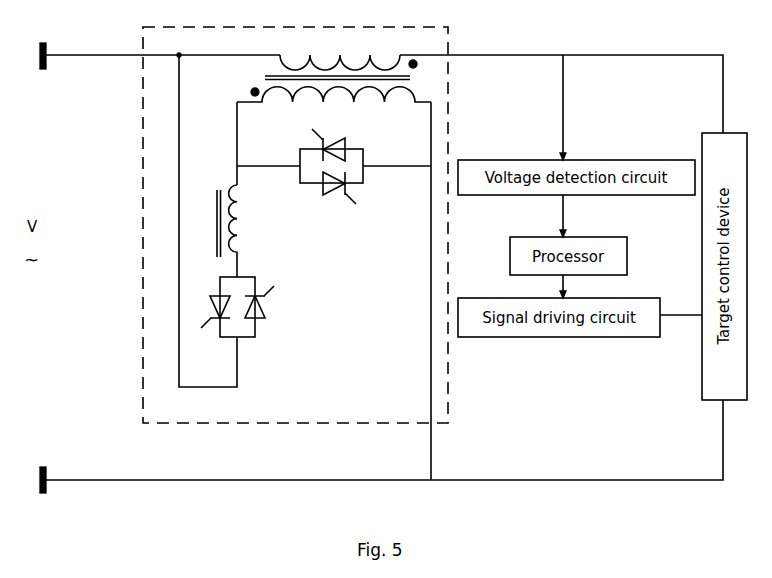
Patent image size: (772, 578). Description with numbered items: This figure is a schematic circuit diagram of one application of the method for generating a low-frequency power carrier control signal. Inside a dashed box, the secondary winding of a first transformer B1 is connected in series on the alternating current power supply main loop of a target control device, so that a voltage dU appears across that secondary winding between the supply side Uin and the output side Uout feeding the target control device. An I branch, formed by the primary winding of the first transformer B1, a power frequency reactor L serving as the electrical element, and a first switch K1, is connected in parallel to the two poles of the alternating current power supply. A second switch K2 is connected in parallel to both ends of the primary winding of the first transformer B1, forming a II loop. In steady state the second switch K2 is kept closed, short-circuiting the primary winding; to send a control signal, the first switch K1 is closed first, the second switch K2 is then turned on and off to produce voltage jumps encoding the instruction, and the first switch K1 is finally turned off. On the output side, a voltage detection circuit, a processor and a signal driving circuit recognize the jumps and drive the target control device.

The first transformer B1 is at (331, 120).
The first switch K1 is at (243, 307).
The second switch K2 is at (334, 181).
The power frequency reactor L is at (221, 231).
The input voltage Uin is at (156, 78).
The output voltage Uout is at (562, 36).
The voltage on both ends of the secondary winding of the first transformer dU is at (336, 41).